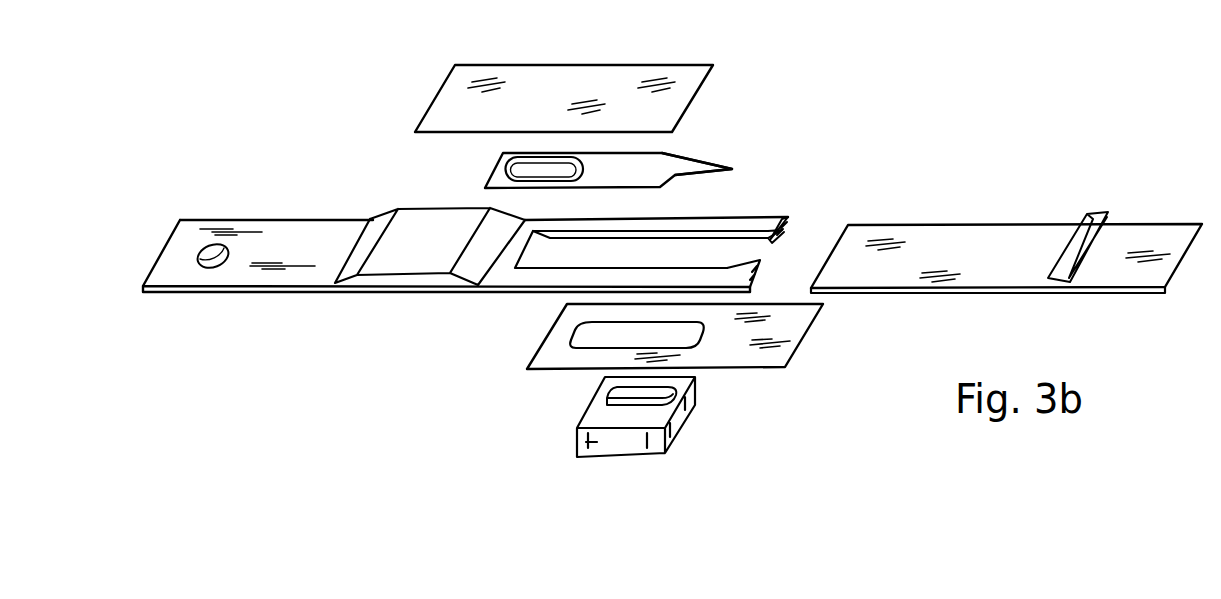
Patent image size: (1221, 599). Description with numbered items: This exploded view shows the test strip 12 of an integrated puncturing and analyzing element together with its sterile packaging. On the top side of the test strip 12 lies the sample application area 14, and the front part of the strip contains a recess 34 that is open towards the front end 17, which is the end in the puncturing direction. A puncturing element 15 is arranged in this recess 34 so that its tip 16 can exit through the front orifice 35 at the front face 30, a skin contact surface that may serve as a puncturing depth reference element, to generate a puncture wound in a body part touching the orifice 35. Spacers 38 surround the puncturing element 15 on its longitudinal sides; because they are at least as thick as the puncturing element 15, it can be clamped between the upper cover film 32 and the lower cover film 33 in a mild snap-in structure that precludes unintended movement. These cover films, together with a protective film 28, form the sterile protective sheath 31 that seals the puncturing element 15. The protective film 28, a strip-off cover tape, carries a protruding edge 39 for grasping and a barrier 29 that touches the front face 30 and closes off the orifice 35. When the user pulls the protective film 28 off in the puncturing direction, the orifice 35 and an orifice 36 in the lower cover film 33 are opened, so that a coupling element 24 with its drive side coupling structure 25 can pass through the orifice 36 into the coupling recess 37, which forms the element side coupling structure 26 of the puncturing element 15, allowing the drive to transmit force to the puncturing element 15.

The test strip 12 is at (263, 276).
The sample application area 14 is at (416, 232).
The puncturing element 15 is at (656, 163).
The tip 16 is at (727, 165).
The front end 17 is at (777, 217).
The coupling element 24 is at (590, 442).
The drive side coupling structure 25 is at (640, 397).
The element side coupling structure 26 is at (577, 160).
The protective film 28 is at (1003, 233).
The barrier 29 is at (1095, 218).
The front face 30 is at (783, 228).
The sterile protective sheath 31 is at (687, 78).
The upper cover film 32 is at (596, 76).
The lower cover film 33 is at (790, 330).
The recess 34 is at (728, 252).
The front orifice 35 is at (763, 255).
The orifice 36 is at (573, 340).
The coupling recess 37 is at (530, 172).
The spacers 38 is at (730, 218).
The protruding edge 39 is at (1115, 278).